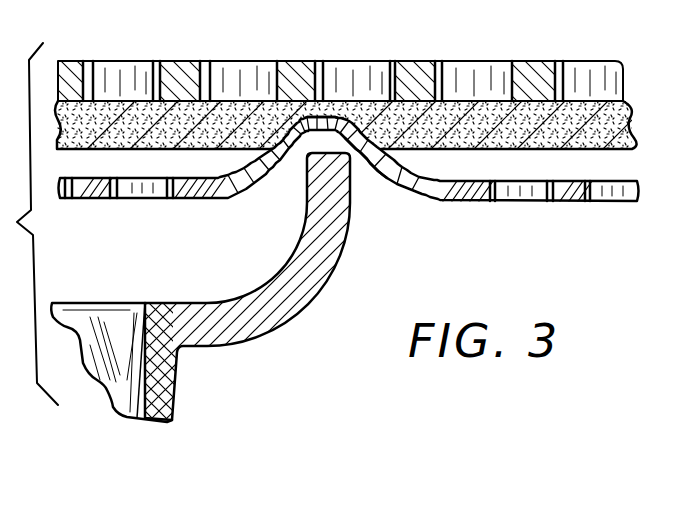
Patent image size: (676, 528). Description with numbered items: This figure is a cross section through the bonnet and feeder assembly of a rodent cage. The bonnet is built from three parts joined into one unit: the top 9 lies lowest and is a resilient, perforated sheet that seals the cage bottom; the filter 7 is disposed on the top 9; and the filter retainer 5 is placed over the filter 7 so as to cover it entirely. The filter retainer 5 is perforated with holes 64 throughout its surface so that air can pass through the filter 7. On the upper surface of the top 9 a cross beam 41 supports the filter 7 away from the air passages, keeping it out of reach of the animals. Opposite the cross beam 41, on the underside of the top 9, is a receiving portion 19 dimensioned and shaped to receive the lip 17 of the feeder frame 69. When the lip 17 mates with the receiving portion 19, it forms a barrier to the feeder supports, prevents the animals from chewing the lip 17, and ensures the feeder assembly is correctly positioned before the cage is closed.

The filter retainer 5 is at (623, 76).
The filter 7 is at (632, 128).
The top 9 is at (641, 196).
The lip 17 is at (344, 259).
The receiving portion 19 is at (337, 142).
The cross beam 41 is at (340, 118).
The holes 64 is at (145, 67).
The frame 69 is at (181, 351).